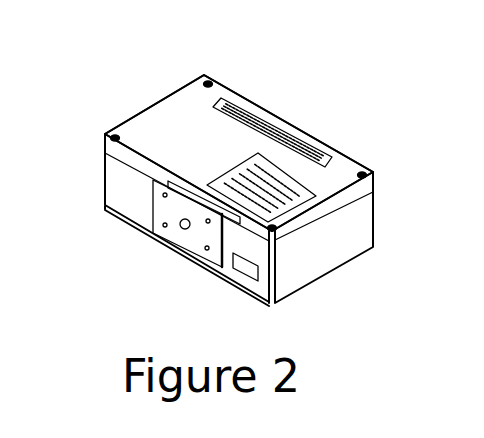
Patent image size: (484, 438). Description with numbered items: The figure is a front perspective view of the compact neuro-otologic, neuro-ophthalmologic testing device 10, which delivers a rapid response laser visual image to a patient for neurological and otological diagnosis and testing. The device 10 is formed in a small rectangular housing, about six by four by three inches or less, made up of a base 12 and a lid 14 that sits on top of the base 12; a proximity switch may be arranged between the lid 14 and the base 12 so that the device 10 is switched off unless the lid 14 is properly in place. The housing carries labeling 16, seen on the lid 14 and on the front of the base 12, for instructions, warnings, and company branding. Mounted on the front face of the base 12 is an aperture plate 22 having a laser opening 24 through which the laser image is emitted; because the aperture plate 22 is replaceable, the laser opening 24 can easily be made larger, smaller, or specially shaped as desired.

The compact neuro-otologic, neuro-ophthalmologic testing device 10 is at (244, 58).
The base 12 is at (116, 192).
The lid 14 is at (171, 118).
The labeling 16 is at (168, 182).
The aperture plate 22 is at (212, 253).
The laser opening 24 is at (181, 227).